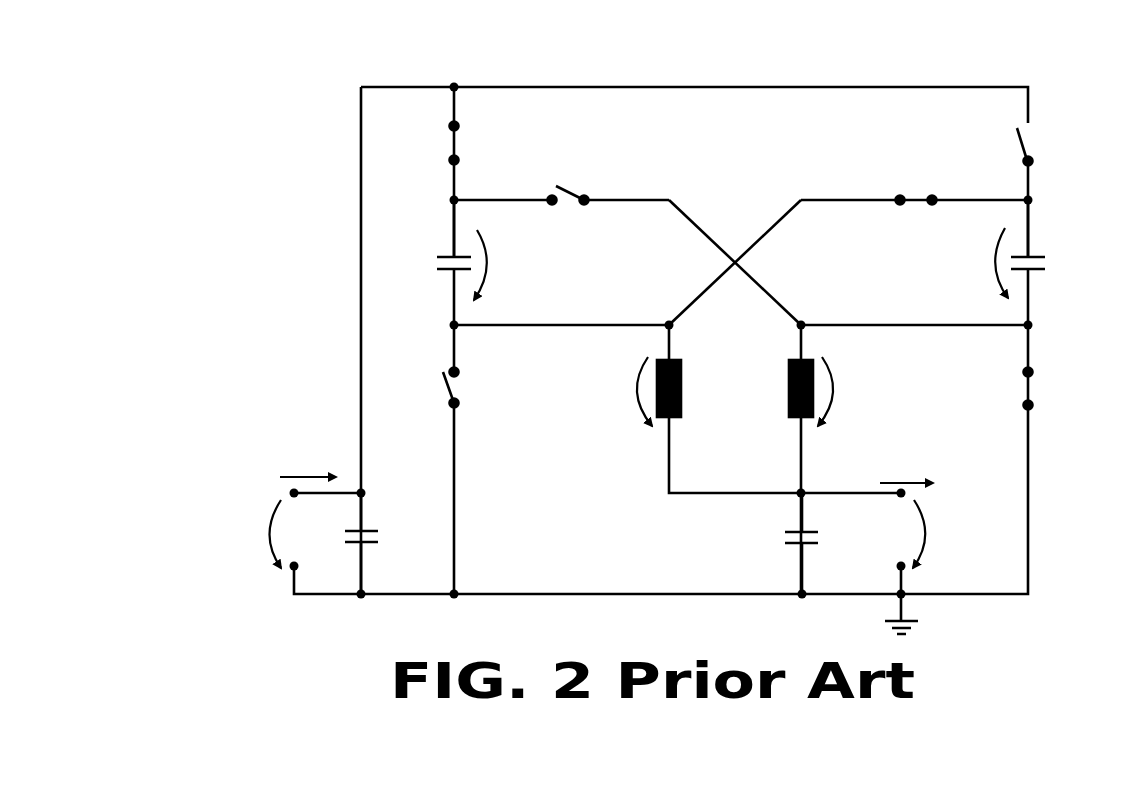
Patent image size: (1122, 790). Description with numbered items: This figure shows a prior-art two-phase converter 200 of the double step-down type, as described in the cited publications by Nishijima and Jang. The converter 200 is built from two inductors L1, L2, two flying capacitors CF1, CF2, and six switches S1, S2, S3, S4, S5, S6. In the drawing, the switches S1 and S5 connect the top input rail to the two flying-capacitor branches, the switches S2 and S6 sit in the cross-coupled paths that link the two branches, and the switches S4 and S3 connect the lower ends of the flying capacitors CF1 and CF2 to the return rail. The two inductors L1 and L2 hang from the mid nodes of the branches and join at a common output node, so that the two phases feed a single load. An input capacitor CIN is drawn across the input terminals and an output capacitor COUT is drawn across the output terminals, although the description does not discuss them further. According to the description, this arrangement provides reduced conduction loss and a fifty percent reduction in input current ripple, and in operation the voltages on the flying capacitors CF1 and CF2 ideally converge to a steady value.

The converter 200 is at (312, 76).
The switch S1 is at (437, 172).
The switch S2 is at (561, 187).
The switch S3 is at (1049, 367).
The switch S4 is at (436, 459).
The switch S5 is at (1045, 192).
The switch S6 is at (914, 187).
The flying capacitor CF1 is at (429, 262).
The flying capacitor CF2 is at (1050, 262).
The inductor L1 is at (688, 388).
The inductor L2 is at (784, 388).
The input capacitor CIN is at (338, 543).
The output capacitor COUT is at (764, 543).